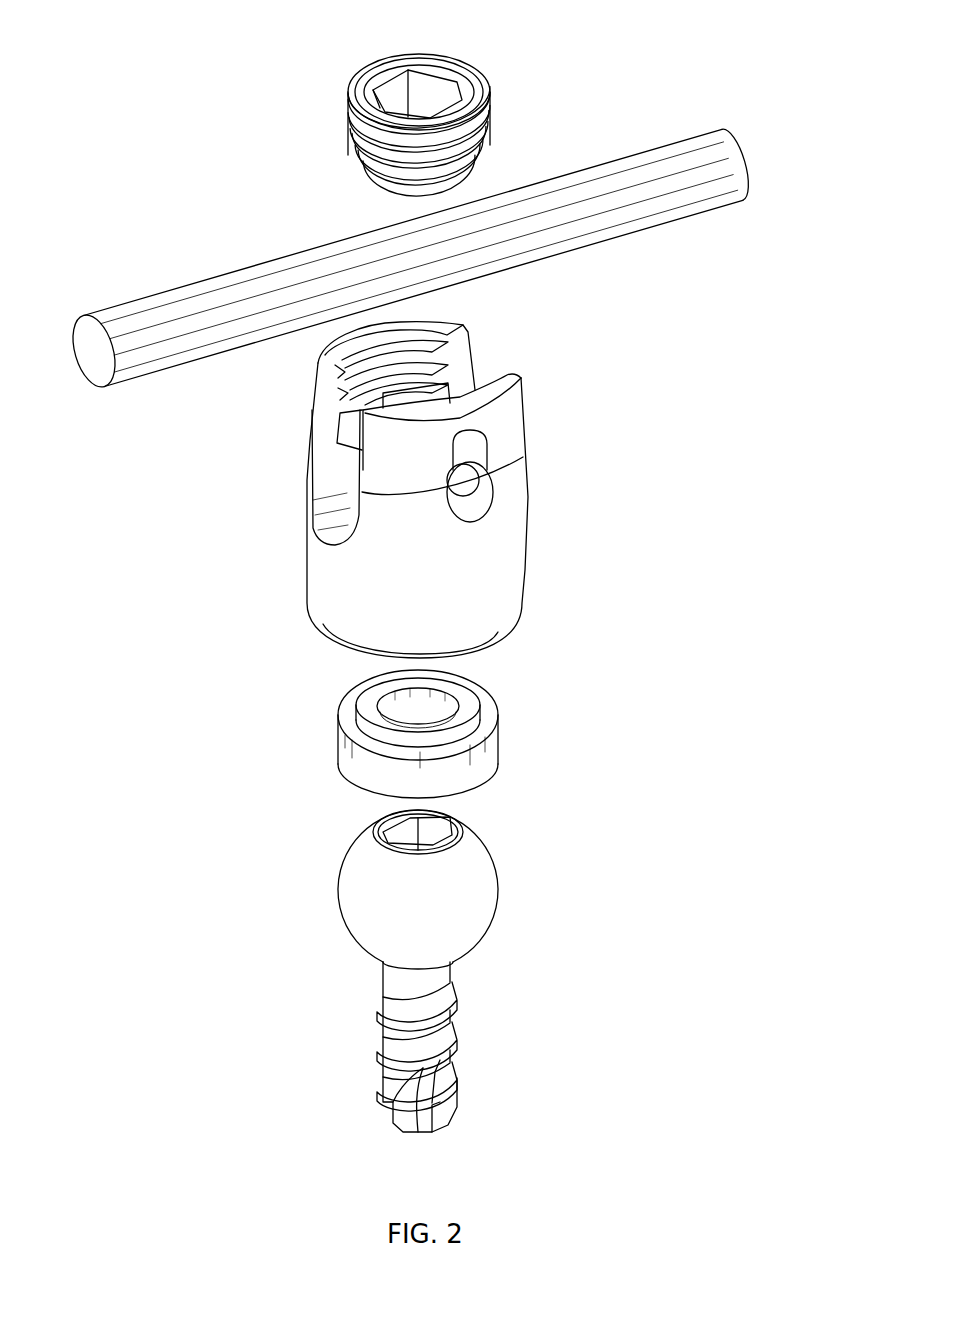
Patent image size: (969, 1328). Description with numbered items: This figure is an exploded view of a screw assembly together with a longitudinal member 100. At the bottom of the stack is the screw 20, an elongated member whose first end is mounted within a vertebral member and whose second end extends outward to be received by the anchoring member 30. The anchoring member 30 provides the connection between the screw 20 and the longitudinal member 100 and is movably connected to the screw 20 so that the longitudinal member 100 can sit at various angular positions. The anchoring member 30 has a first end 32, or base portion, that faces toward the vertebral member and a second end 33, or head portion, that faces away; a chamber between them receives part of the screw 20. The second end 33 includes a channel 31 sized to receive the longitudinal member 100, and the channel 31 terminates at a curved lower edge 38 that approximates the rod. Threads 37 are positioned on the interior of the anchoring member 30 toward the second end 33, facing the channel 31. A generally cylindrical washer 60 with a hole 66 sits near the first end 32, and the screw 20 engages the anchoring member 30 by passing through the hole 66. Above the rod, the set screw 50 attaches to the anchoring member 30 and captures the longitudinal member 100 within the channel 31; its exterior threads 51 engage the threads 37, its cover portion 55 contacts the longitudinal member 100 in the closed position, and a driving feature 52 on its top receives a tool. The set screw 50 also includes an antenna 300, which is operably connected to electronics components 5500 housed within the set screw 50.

The longitudinal member 100 is at (222, 287).
The set screw 50 is at (538, 95).
The electronics components 5500 is at (550, 131).
The antenna 300 is at (470, 78).
The driving feature 52 is at (390, 93).
The exterior threads 51 is at (367, 140).
The cover portion 55 is at (400, 196).
The anchoring member 30 is at (584, 477).
The channel 31 is at (485, 357).
The second end 33 is at (503, 383).
The threads 37 is at (352, 372).
The lower edge 38 is at (345, 521).
The first end 32 is at (481, 652).
The washer 60 is at (556, 742).
The hole 66 is at (412, 706).
The screw 20 is at (548, 896).